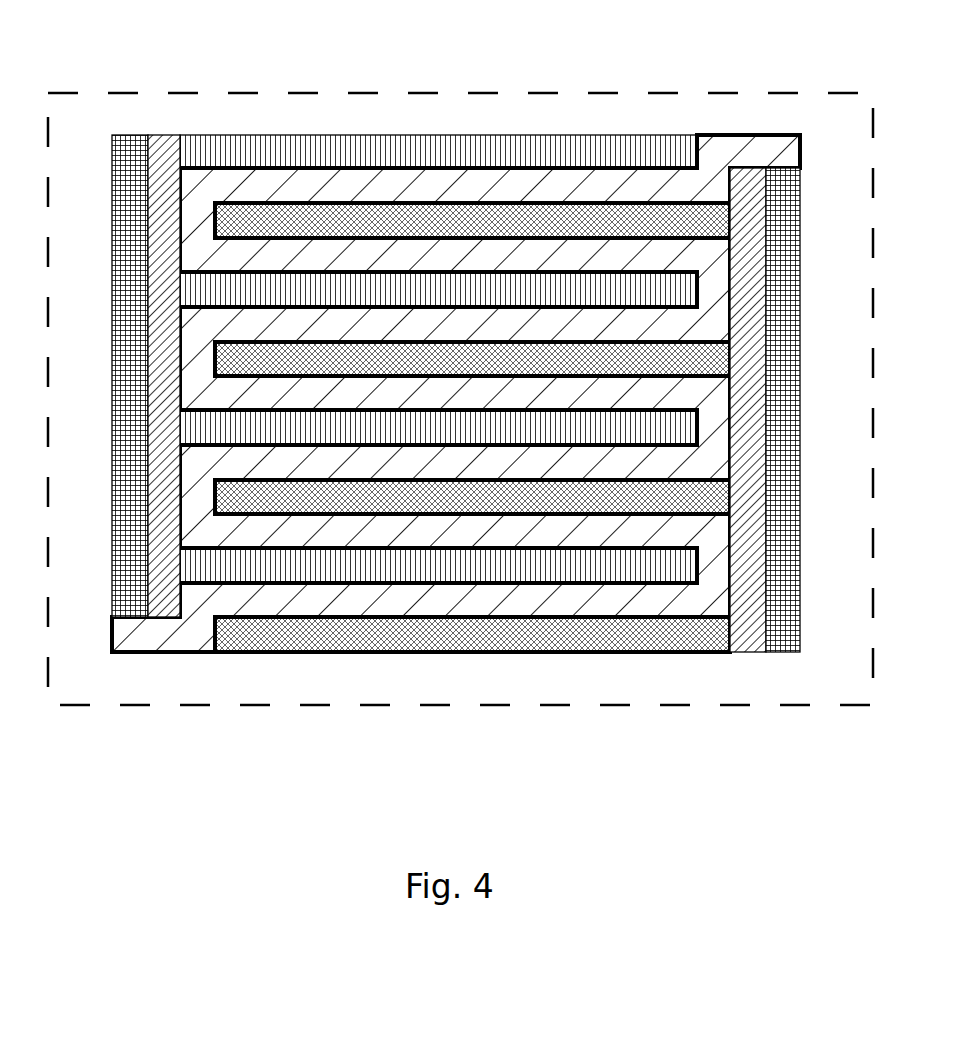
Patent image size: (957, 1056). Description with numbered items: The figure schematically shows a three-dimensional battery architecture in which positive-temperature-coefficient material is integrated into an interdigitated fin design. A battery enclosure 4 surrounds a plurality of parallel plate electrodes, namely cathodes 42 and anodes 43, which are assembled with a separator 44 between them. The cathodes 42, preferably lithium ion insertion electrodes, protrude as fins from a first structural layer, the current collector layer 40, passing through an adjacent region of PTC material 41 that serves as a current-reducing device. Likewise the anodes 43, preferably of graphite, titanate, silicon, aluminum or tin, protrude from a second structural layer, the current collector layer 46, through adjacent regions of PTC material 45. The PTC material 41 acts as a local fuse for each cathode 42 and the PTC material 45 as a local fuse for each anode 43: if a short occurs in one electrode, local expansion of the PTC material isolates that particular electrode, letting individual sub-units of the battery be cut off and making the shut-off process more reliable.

The battery enclosure 4 is at (385, 706).
The current collector layer 40 is at (127, 157).
The PTC material 41 is at (160, 607).
The cathodes 42 is at (313, 152).
The anodes 43 is at (408, 227).
The separator 44 is at (563, 183).
The PTC material 45 is at (742, 197).
The current collector layer 46 is at (783, 605).